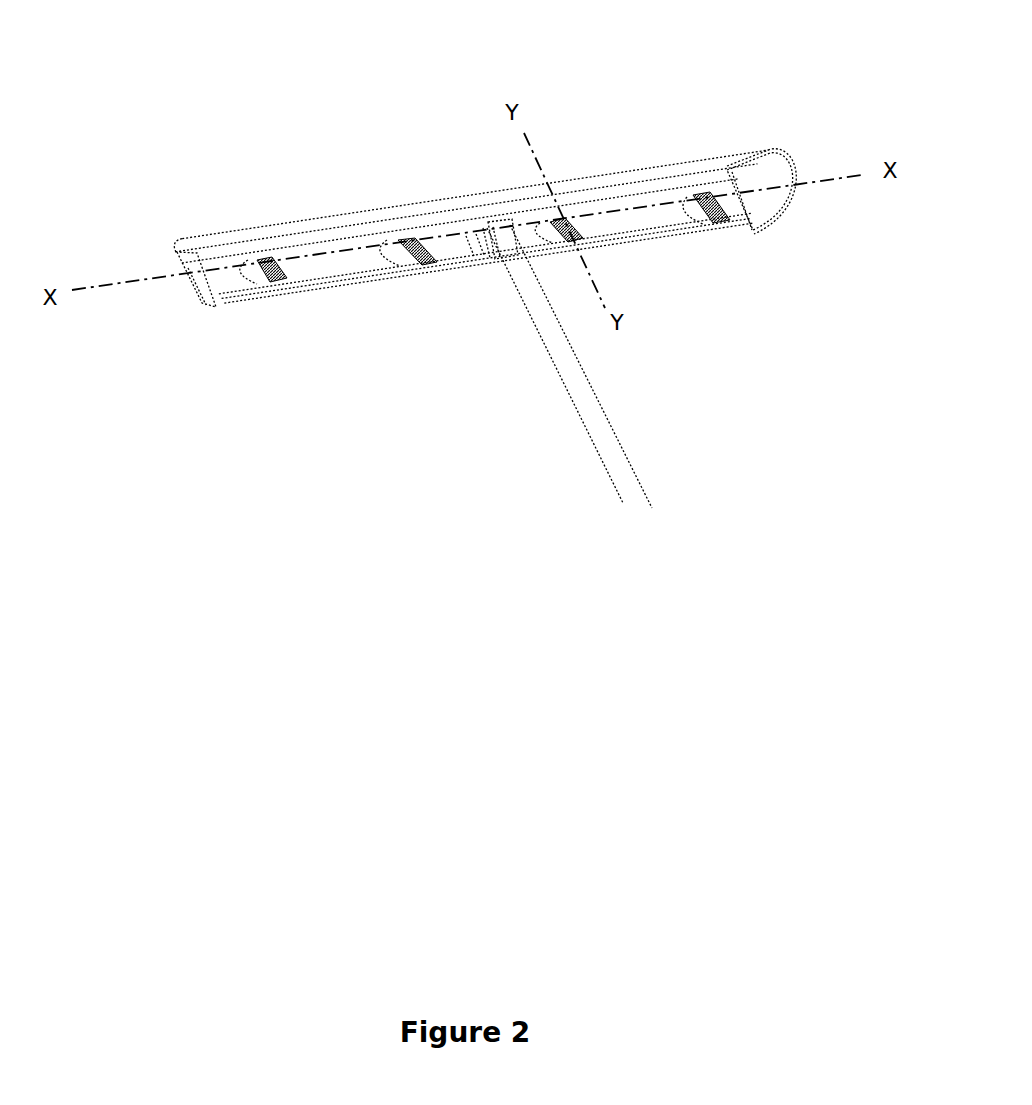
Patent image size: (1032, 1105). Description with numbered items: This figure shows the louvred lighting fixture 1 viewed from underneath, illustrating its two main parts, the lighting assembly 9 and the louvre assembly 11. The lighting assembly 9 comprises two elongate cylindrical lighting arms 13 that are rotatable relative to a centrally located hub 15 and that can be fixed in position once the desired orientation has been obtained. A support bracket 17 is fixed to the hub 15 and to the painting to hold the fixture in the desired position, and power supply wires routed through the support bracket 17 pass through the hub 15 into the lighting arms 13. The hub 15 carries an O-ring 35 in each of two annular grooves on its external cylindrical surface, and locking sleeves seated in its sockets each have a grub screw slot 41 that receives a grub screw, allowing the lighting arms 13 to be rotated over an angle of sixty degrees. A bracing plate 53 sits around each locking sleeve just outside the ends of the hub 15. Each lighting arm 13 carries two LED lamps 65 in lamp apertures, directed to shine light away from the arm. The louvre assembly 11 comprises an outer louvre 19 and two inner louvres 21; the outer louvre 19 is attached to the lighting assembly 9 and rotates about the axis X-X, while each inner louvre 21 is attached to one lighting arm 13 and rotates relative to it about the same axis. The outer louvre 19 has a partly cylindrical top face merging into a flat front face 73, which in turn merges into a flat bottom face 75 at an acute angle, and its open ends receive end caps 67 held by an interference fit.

The louvred lighting fixture 1 is at (728, 117).
The lighting assembly 9 is at (672, 253).
The louvre assembly 11 is at (780, 235).
The lighting arm 13 is at (338, 262).
The hub 15 is at (478, 245).
The support bracket 17 is at (600, 458).
The outer louvre 19 is at (197, 242).
The inner louvre 21 is at (275, 287).
The O-ring 35 is at (488, 245).
The grub screw slot 41 is at (470, 245).
The bracing plate 53 is at (465, 250).
The LED lamp 65 is at (262, 282).
The end cap 67 is at (210, 293).
The front face 73 is at (682, 162).
The bottom face 75 is at (630, 192).